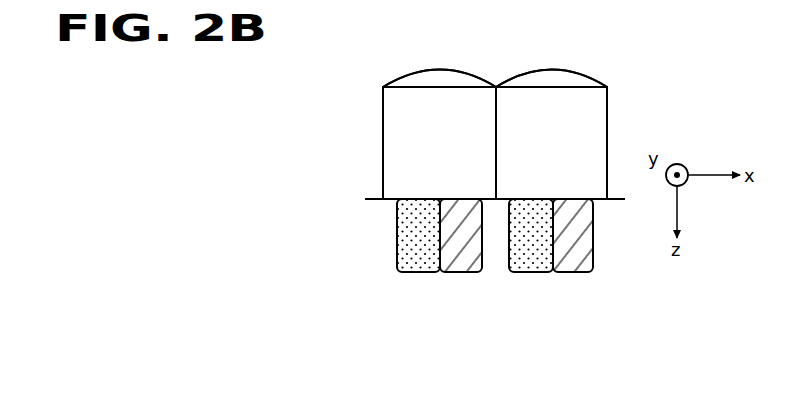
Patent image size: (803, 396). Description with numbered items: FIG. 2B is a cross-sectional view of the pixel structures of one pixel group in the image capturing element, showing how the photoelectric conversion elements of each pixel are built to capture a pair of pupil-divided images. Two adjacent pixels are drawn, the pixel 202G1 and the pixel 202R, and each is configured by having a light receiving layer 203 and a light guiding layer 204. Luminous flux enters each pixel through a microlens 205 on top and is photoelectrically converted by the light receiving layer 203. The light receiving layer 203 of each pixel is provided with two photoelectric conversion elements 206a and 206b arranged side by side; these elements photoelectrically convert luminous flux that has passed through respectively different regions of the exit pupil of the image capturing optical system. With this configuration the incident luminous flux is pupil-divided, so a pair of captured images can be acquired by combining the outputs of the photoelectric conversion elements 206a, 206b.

The pixel 202G1 is at (438, 62).
The pixel 202R is at (551, 62).
The light receiving layer 203 is at (353, 70).
The light guiding layer 204 is at (353, 199).
The microlens 205 is at (600, 73).
The photoelectric conversion element 206a is at (417, 273).
The photoelectric conversion element 206b is at (458, 273).